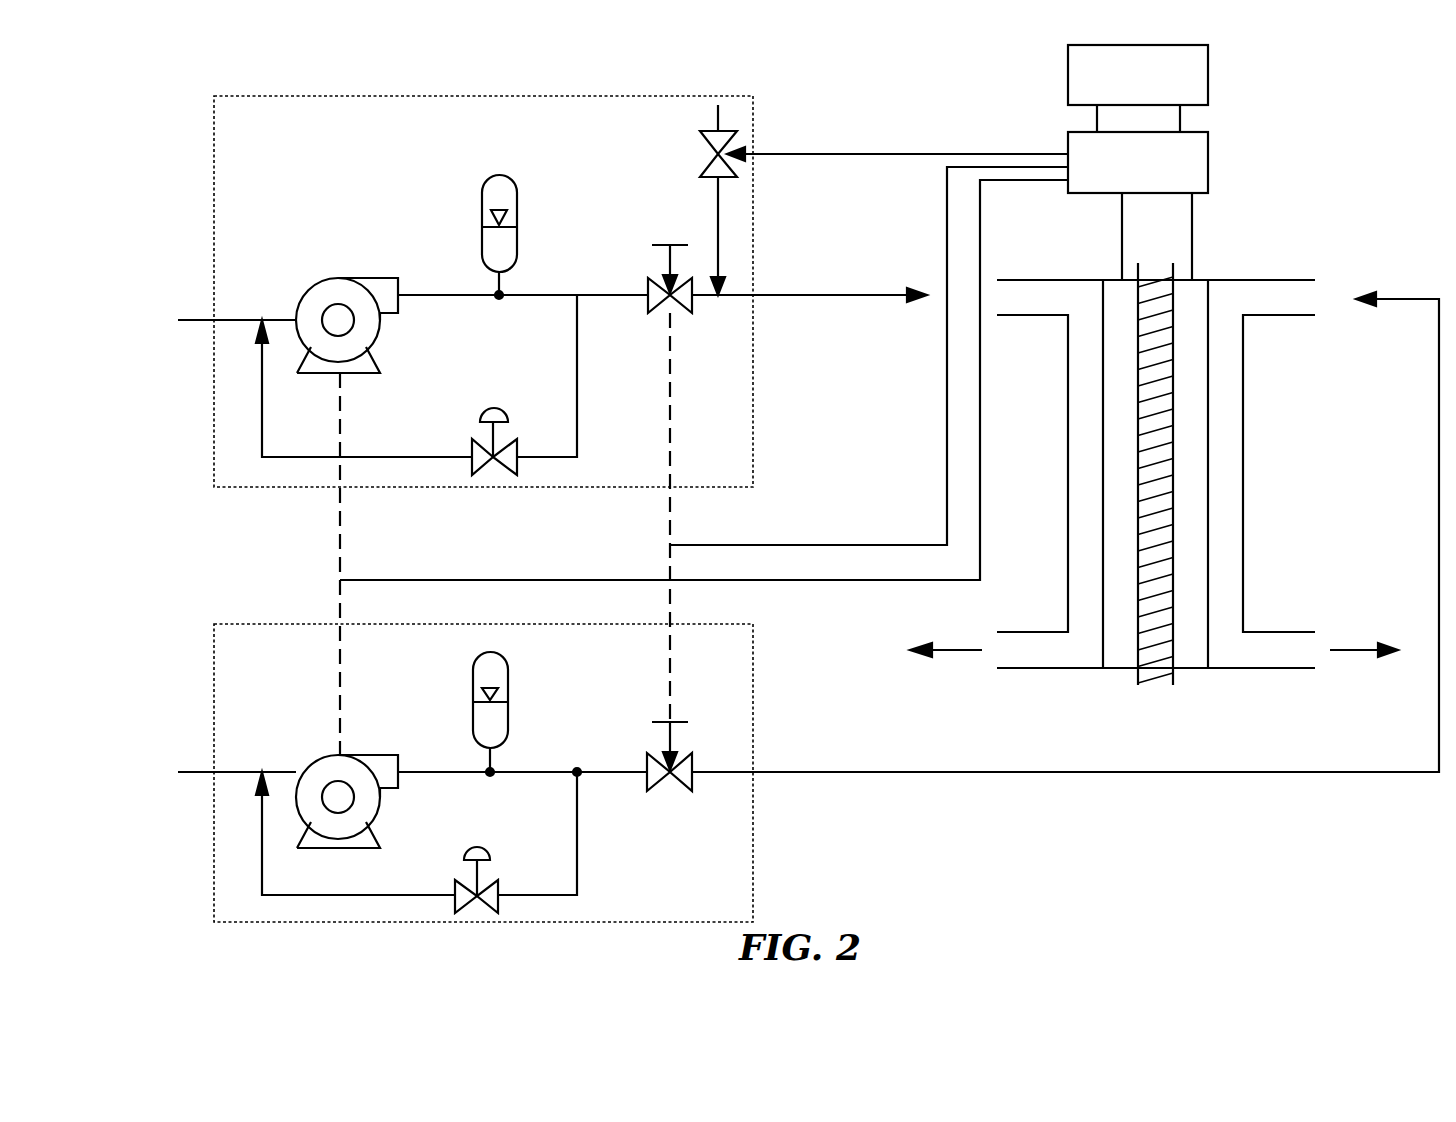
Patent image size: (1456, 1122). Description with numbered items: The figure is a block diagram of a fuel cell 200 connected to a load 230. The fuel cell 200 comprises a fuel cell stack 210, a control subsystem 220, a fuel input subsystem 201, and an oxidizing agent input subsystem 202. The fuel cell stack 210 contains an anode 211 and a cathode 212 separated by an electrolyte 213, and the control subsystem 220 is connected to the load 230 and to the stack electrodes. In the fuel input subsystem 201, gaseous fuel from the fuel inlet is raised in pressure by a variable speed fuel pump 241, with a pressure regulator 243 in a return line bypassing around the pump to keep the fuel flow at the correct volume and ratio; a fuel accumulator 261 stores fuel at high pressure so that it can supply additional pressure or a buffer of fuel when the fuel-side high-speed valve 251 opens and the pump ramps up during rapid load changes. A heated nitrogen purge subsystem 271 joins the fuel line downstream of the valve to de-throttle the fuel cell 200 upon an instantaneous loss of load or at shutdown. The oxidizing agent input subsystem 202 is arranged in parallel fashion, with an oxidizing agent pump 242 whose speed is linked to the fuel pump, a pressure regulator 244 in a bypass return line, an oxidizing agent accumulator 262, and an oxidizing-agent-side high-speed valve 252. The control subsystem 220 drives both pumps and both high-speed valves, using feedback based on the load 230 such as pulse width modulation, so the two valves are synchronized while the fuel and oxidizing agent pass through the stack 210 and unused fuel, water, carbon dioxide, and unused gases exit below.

The fuel cell 200 is at (167, 68).
The fuel input subsystem 201 is at (268, 133).
The oxidizing agent input subsystem 202 is at (258, 665).
The fuel cell stack 210 is at (1154, 477).
The anode 211 is at (1112, 278).
The cathode 212 is at (1200, 278).
The electrolyte 213 is at (1185, 491).
The control subsystem 220 is at (1123, 185).
The load 230 is at (1123, 99).
The fuel pump 241 is at (340, 278).
The oxidizing agent pump 242 is at (322, 755).
The pressure regulator 243 is at (473, 442).
The pressure regulator 244 is at (467, 883).
The fuel-side high-speed valve 251 is at (657, 287).
The oxidizing-agent-side high-speed valve 252 is at (657, 765).
The fuel accumulator 261 is at (483, 217).
The oxidizing agent accumulator 262 is at (473, 685).
The heated nitrogen purge subsystem 271 is at (707, 175).